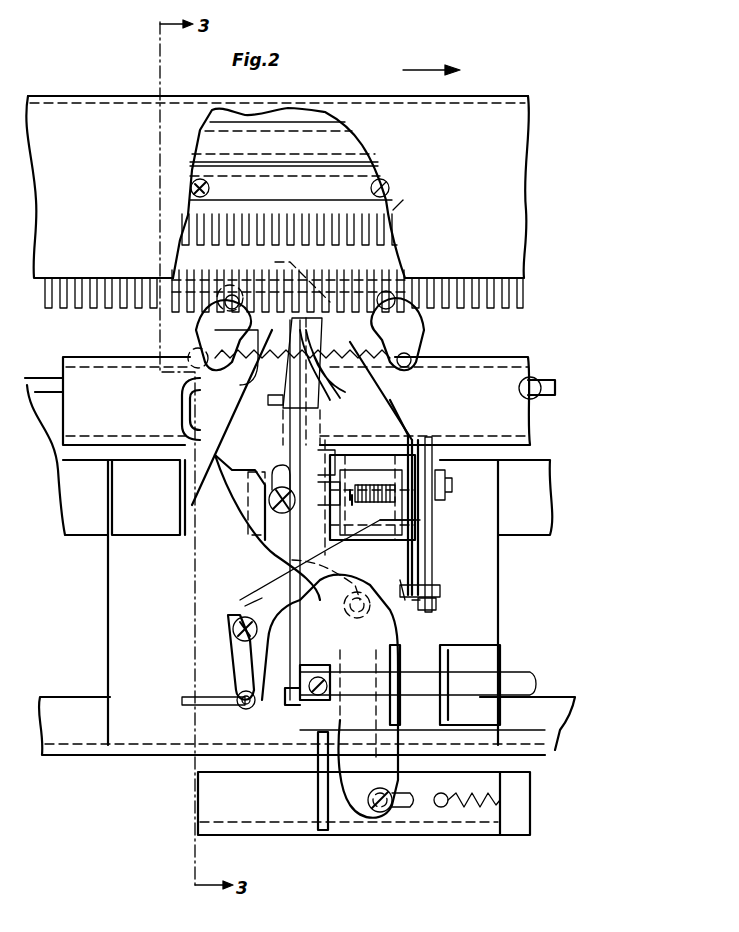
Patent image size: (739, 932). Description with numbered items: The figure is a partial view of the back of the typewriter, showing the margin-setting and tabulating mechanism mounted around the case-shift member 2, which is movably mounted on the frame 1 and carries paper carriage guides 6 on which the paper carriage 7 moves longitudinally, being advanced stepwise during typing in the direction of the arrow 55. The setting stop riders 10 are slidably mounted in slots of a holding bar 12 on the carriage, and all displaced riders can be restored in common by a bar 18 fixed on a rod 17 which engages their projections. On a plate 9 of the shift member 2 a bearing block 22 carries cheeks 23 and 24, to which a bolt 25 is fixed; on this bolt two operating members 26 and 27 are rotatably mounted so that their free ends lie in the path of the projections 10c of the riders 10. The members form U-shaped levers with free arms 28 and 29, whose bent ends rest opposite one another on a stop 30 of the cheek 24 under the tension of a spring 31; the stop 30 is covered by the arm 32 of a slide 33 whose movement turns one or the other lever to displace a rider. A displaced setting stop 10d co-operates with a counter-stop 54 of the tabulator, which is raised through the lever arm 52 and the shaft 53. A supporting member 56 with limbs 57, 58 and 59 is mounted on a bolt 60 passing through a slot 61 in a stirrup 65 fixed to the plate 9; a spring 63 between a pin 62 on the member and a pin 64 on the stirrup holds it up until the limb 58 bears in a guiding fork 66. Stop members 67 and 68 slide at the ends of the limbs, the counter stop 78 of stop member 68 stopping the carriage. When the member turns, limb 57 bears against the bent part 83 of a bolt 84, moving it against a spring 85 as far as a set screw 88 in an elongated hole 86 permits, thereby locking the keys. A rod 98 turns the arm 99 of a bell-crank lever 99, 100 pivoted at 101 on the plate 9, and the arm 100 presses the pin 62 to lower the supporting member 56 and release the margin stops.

The frame 1 is at (210, 788).
The case-shift member 2 is at (57, 708).
The paper carriage guides 6 is at (535, 372).
The paper carriage 7 is at (524, 226).
The plate 9 is at (110, 600).
The setting stop riders 10 is at (316, 222).
The projections of the riders 10c is at (100, 305).
The setting stop 10d is at (215, 276).
The holding bar 12 is at (392, 206).
The rod 17 is at (352, 146).
The bar 18 is at (195, 168).
The bearing block 22 is at (415, 440).
The cheek 23 is at (352, 505).
The cheek 24 is at (420, 514).
The bolt 25 is at (450, 484).
The operating member 26 is at (332, 378).
The operating member 27 is at (272, 384).
The free arm 28 is at (440, 587).
The free arm 29 is at (408, 585).
The stop 30 is at (418, 605).
The spring 31 is at (378, 505).
The arm of the slide 32 is at (436, 606).
The slide 33 is at (434, 448).
The lever arm 52 is at (323, 702).
The shaft 53 is at (422, 690).
The counter-stop 54 is at (290, 393).
The arrow 55 is at (427, 67).
The supporting member 56 is at (325, 606).
The limb 57 is at (378, 752).
The limb 58 is at (230, 345).
The limb 59 is at (400, 378).
The bolt 60 is at (270, 500).
The slot 61 is at (283, 476).
The pin 62 is at (358, 610).
The spring 63 is at (280, 577).
The pin 64 is at (325, 463).
The stirrup 65 is at (256, 535).
The guiding fork 66 is at (182, 400).
The stop member 67 is at (185, 325).
The stop member 68 is at (420, 328).
The counter stop 78 is at (275, 262).
The bent part 83 is at (318, 786).
The bolt 84 is at (458, 818).
The spring 85 is at (488, 818).
The elongated hole 86 is at (410, 812).
The set screw 88 is at (385, 812).
The rod 98 is at (214, 702).
The arm of the bell crank lever 99 is at (233, 648).
The arm of the bell-crank lever 100 is at (255, 607).
The pivot 101 is at (233, 629).